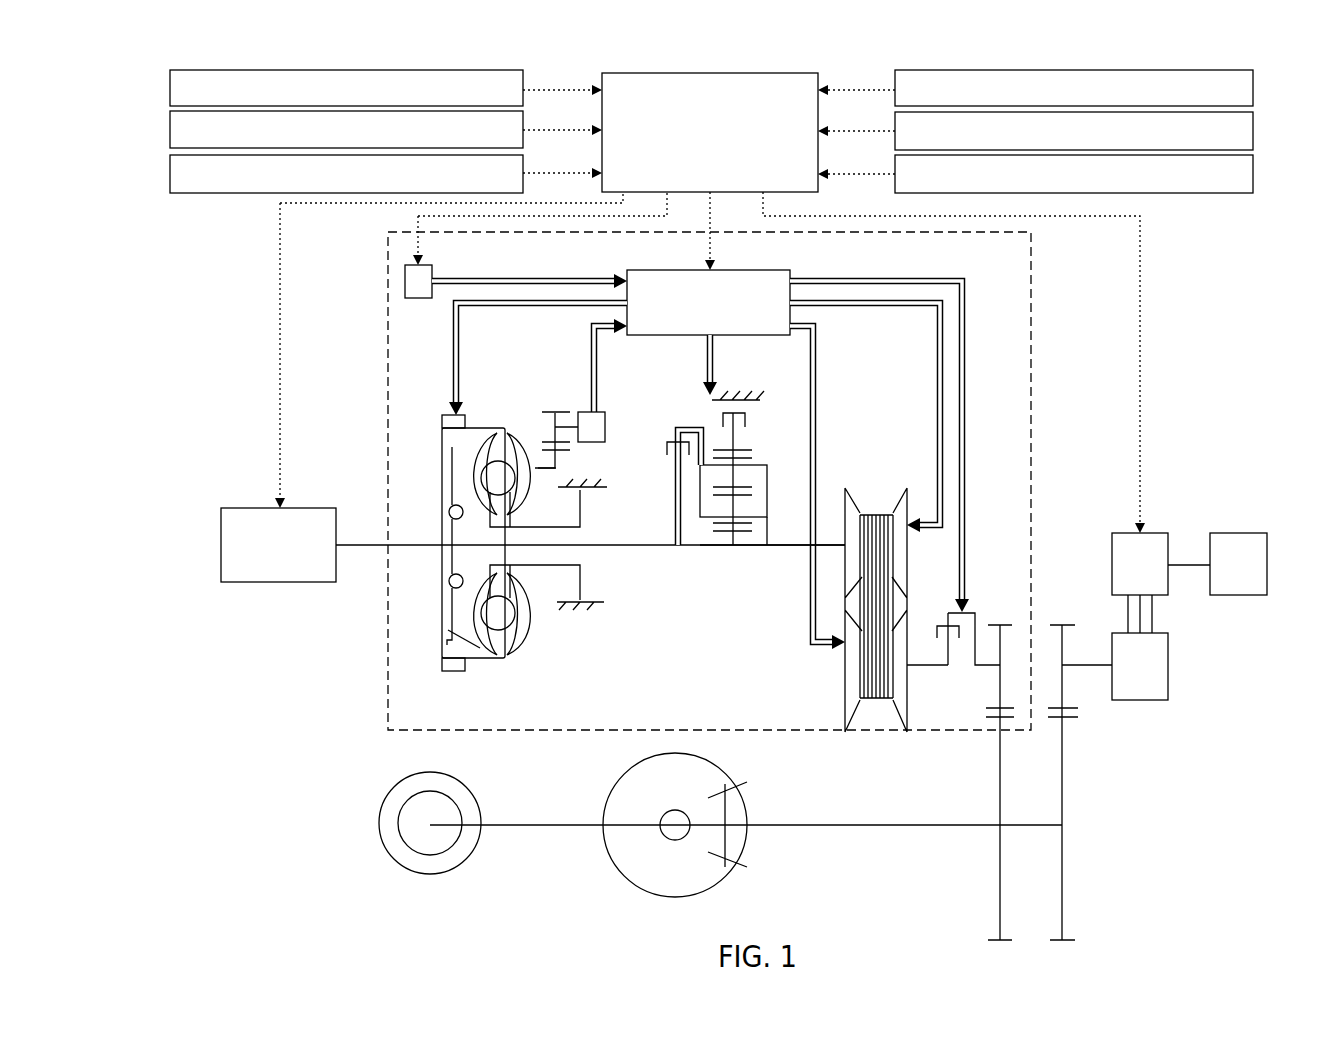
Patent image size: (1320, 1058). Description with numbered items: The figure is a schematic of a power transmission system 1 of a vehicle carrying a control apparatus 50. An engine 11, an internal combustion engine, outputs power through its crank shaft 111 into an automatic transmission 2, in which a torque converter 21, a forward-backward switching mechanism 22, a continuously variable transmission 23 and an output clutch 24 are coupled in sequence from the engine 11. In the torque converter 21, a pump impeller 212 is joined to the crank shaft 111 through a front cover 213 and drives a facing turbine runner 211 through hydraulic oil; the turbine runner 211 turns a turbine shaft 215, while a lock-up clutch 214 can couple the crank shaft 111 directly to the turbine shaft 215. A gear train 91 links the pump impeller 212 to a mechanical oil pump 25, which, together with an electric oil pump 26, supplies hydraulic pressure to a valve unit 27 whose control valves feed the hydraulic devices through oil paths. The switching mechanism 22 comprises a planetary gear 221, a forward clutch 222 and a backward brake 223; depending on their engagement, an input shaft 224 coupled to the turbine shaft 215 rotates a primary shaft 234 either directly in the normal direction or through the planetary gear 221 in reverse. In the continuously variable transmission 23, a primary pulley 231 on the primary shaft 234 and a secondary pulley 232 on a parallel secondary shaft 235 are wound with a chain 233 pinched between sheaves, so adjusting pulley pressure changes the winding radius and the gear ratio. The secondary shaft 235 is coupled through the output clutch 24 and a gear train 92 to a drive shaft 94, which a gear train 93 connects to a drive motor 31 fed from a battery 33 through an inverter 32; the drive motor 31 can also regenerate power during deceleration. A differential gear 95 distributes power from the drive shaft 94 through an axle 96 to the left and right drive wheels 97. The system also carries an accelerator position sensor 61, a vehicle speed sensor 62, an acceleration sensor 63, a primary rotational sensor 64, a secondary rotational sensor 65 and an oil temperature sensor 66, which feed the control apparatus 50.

The power transmission system 1 is at (38, 64).
The automatic transmission 2 is at (1033, 263).
The engine 11 is at (282, 584).
The crank shaft 111 is at (357, 548).
The torque converter 21 is at (497, 412).
The turbine runner 211 is at (480, 426).
The pump impeller 212 is at (533, 426).
The front cover 213 is at (442, 630).
The lock-up clutch 214 is at (488, 660).
The turbine shaft 215 is at (555, 548).
The forward-backward switching mechanism 22 is at (768, 385).
The planetary gear 221 is at (800, 466).
The forward clutch 222 is at (676, 440).
The backward brake 223 is at (746, 418).
The input shaft 224 is at (705, 548).
The continuously variable transmission 23 is at (866, 440).
The primary pulley 231 is at (907, 487).
The secondary pulley 232 is at (843, 683).
The chain 233 is at (872, 512).
The primary shaft 234 is at (790, 548).
The secondary shaft 235 is at (940, 668).
The output clutch 24 is at (948, 617).
The mechanical oil pump 25 is at (598, 405).
The electric oil pump 26 is at (420, 300).
The valve unit 27 is at (728, 268).
The drive motor 31 is at (1145, 702).
The inverter 32 is at (1155, 531).
The battery 33 is at (1238, 531).
The control apparatus 50 is at (712, 73).
The accelerator position sensor 61 is at (168, 89).
The vehicle speed sensor 62 is at (168, 130).
The acceleration sensor 63 is at (168, 173).
The primary rotational sensor 64 is at (1255, 89).
The secondary rotational sensor 65 is at (1255, 130).
The oil temperature sensor 66 is at (1255, 173).
The gear train 91 is at (560, 410).
The gear train 92 is at (1003, 608).
The gear train 93 is at (1065, 608).
The drive shaft 94 is at (839, 828).
The differential gear 95 is at (657, 893).
The axle 96 is at (667, 838).
The drive wheels 97 is at (432, 870).